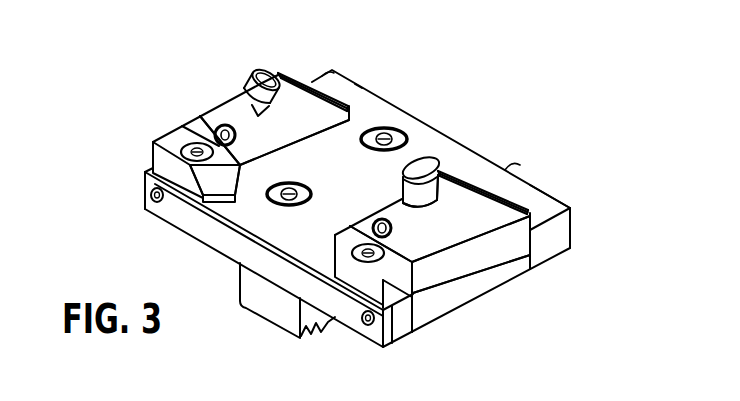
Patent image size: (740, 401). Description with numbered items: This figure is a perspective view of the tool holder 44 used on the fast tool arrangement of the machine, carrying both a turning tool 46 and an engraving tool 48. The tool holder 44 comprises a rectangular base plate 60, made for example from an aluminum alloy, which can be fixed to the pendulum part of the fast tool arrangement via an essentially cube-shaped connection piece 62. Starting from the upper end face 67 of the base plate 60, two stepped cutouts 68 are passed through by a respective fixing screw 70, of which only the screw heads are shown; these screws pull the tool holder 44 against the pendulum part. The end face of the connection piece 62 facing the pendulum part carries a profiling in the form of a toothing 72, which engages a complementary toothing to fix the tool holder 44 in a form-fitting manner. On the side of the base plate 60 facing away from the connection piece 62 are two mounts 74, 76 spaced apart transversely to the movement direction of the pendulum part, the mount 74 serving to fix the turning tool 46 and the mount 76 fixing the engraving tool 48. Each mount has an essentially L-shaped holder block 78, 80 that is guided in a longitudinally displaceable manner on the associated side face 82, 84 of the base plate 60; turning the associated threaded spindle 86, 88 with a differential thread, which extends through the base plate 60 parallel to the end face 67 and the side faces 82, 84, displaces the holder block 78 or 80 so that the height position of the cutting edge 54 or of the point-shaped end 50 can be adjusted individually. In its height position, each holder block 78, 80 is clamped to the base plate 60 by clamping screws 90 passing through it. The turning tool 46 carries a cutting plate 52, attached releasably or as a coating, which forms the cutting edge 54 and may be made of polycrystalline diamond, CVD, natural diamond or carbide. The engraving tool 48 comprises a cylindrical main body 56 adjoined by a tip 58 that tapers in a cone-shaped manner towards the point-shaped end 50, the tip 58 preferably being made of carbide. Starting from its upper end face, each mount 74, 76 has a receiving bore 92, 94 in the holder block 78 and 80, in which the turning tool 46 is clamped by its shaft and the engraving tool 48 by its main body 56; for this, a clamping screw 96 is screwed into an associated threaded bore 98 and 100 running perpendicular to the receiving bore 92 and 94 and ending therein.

The tool holder 44 is at (406, 108).
The turning tool 46 is at (257, 71).
The engraving tool 48 is at (434, 205).
The point-shaped end 50 is at (420, 160).
The cutting plate 52 is at (247, 83).
The cutting edge 54 is at (265, 70).
The cylindrical main body 56 is at (398, 188).
The tip 58 is at (452, 173).
The base plate 60 is at (551, 210).
The connection piece 62 is at (271, 301).
The upper end face 67 is at (360, 85).
The stepped cutouts 68 is at (272, 197).
The fixing screws 70 is at (287, 206).
The toothing 72 is at (321, 332).
The mount 74 is at (303, 78).
The mount 76 is at (497, 197).
The holder block 78 is at (294, 136).
The holder block 80 is at (471, 236).
The side face 82 is at (145, 182).
The side face 84 is at (560, 238).
The threaded spindle 86 is at (152, 203).
The threaded spindle 88 is at (368, 327).
The clamping screws 90 is at (185, 147).
The receiving bore 92 is at (237, 137).
The receiving bore 94 is at (392, 228).
The clamping screw 96 is at (372, 222).
The threaded bore 98 is at (213, 118).
The threaded bore 100 is at (471, 287).